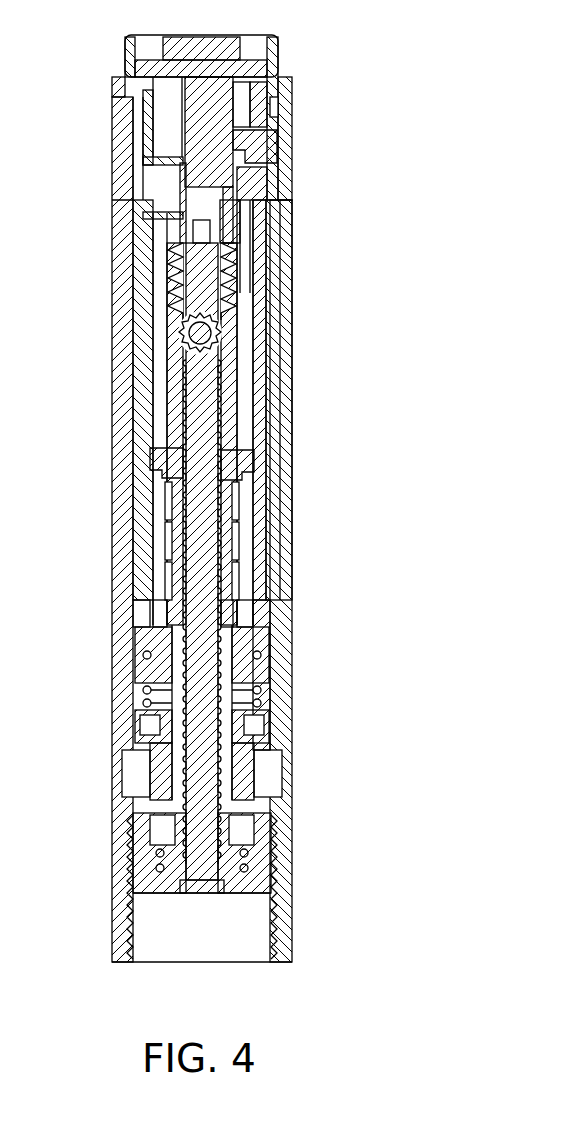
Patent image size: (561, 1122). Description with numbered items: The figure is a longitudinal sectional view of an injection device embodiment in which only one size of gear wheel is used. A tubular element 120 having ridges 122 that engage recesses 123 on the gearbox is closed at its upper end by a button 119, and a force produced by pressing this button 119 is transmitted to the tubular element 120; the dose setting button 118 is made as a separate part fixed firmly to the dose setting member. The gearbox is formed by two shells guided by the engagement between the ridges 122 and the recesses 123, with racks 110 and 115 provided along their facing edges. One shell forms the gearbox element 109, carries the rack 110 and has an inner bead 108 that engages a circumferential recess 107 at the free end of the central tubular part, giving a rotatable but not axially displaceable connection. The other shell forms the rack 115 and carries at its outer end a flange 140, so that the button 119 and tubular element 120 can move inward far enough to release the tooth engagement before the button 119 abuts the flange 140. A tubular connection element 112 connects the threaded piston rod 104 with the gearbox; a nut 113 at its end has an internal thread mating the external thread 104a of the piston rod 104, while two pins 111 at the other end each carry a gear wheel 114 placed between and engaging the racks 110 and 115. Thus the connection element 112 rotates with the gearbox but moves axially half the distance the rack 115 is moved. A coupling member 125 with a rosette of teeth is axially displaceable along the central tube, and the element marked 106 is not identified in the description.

The button 119 is at (290, 26).
The dose setting button 118 is at (284, 85).
The flange 140 is at (262, 165).
The recesses 123 is at (148, 213).
The rack 115 is at (235, 228).
The tubular element 120 is at (275, 252).
The ridges 122 is at (135, 281).
The pins 111 is at (222, 332).
The gear wheel 114 is at (225, 352).
The gearbox element 109 is at (143, 388).
The inner bead 108 is at (152, 466).
The circumferential recess 107 is at (248, 466).
The sleeve 106 is at (168, 570).
The tubular connection element 112 is at (225, 598).
The piston rod 104 is at (230, 608).
The coupling member 125 is at (262, 668).
The nut 113 is at (262, 790).
The external thread 104a is at (225, 828).
The rack 110 is at (175, 238).